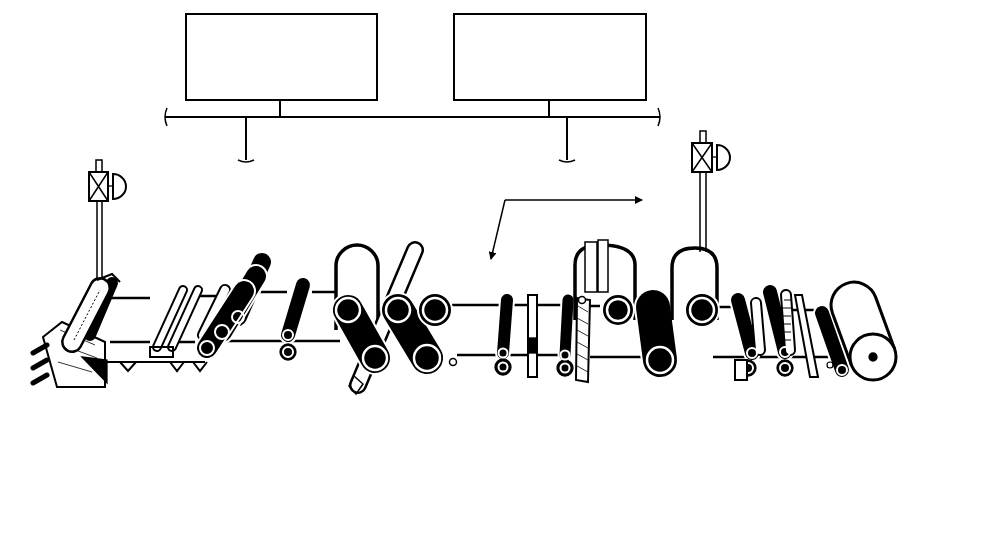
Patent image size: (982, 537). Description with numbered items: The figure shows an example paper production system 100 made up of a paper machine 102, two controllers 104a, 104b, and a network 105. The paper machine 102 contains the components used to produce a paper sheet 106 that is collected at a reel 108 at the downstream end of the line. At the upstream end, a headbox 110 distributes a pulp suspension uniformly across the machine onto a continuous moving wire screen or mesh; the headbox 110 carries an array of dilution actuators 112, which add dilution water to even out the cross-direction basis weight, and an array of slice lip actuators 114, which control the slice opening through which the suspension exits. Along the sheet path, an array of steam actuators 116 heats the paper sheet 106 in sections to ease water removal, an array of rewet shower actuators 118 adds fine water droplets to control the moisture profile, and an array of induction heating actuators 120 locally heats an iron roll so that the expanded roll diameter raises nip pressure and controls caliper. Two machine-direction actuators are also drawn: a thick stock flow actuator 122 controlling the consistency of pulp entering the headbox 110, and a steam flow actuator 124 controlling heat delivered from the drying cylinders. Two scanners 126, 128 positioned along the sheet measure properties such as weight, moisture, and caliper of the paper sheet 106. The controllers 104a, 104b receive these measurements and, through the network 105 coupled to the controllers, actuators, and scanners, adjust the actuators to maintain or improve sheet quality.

The paper production system 100 is at (629, 491).
The paper machine 102 is at (247, 209).
The controller 104a is at (373, 97).
The controller 104b is at (642, 97).
The network 105 is at (404, 123).
The paper sheet 106 is at (258, 347).
The reel 108 is at (878, 390).
The headbox 110 is at (58, 303).
The array of dilution actuators 112 is at (37, 392).
The array of slice lip actuators 114 is at (107, 270).
The array of steam actuators 116 is at (227, 359).
The array of rewet shower actuators 118 is at (357, 396).
The array of induction heating actuators 120 is at (798, 375).
The thick stock flow actuator 122 is at (114, 159).
The steam flow actuator 124 is at (715, 141).
The scanner 126 is at (534, 380).
The scanner 128 is at (798, 292).